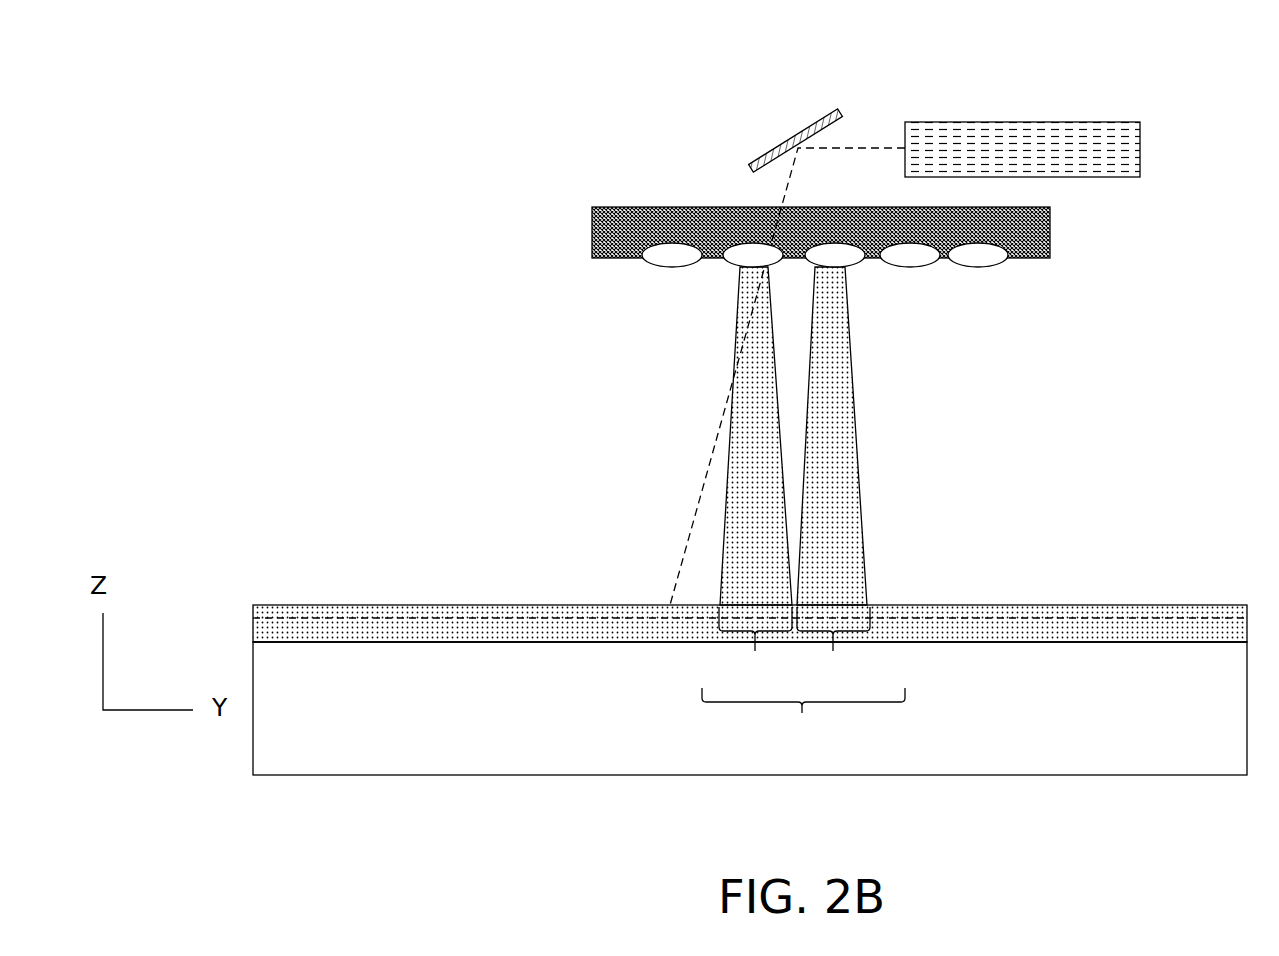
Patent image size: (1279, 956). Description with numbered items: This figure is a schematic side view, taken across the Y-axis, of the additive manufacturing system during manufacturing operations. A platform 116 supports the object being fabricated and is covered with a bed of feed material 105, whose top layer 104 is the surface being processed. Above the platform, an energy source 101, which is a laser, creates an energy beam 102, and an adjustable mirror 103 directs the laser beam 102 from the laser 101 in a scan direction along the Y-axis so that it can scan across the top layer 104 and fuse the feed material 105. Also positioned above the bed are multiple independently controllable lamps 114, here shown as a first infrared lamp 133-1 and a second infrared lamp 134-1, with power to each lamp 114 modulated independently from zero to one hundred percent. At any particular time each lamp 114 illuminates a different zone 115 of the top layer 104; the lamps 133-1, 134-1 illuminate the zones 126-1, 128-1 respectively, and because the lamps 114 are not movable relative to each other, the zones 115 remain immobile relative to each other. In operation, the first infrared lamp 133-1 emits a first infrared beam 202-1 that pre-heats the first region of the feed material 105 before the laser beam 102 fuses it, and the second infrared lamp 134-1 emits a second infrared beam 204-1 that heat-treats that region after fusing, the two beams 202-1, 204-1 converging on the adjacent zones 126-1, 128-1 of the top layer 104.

The energy source 101 is at (1023, 123).
The energy beam 102 is at (785, 189).
The adjustable mirror 103 is at (793, 139).
The top layer 104 is at (1088, 610).
The feed material 105 is at (535, 637).
The lamp 114 is at (785, 273).
The zone 115 is at (803, 722).
The platform 116 is at (980, 710).
The zone 126-1 is at (750, 649).
The zone 128-1 is at (840, 649).
The first infrared lamp 133-1 is at (840, 268).
The second infrared lamp 134-1 is at (765, 268).
The first infrared beam 202-1 is at (753, 488).
The second infrared beam 204-1 is at (837, 498).